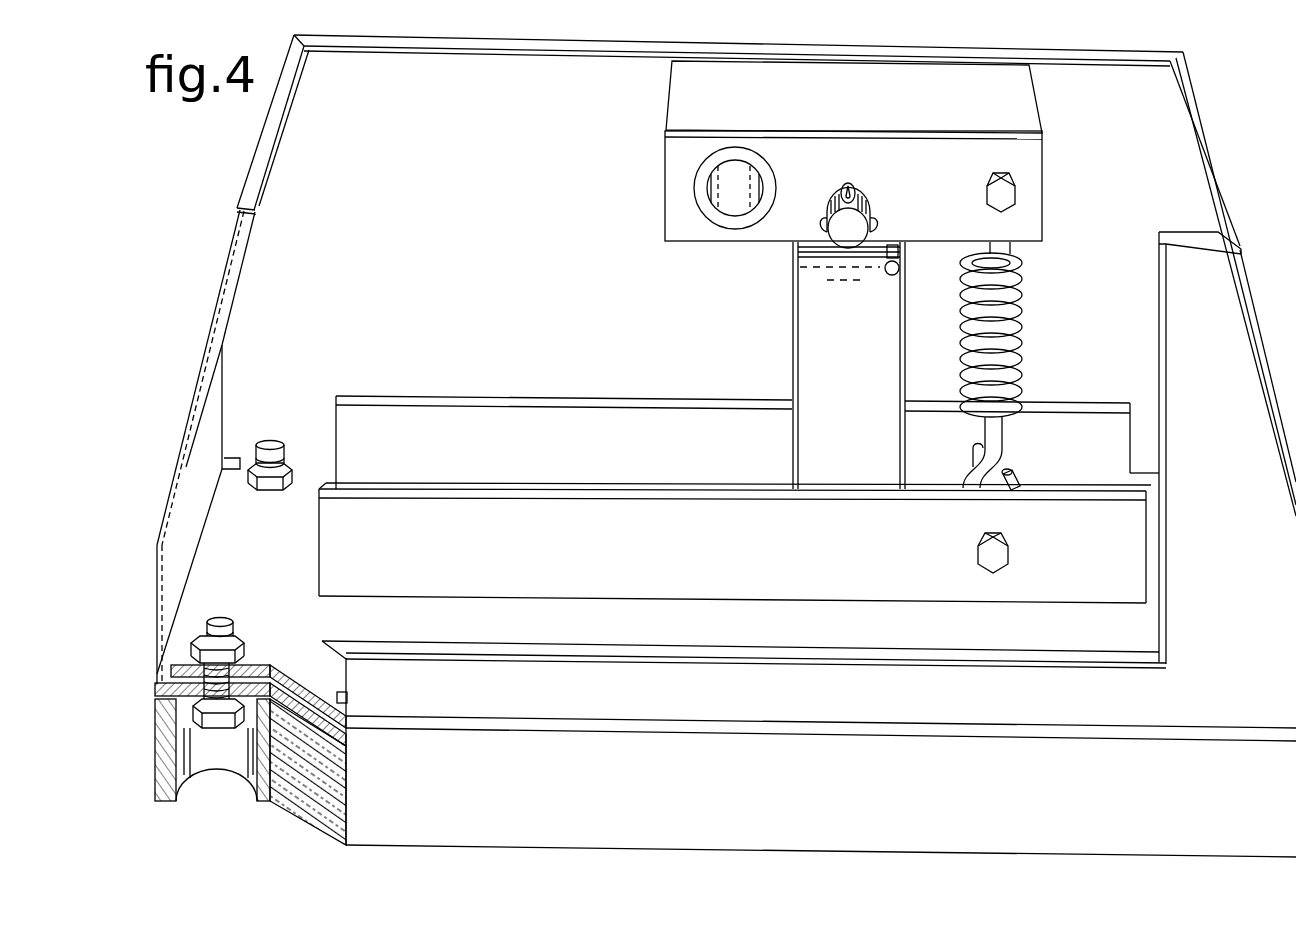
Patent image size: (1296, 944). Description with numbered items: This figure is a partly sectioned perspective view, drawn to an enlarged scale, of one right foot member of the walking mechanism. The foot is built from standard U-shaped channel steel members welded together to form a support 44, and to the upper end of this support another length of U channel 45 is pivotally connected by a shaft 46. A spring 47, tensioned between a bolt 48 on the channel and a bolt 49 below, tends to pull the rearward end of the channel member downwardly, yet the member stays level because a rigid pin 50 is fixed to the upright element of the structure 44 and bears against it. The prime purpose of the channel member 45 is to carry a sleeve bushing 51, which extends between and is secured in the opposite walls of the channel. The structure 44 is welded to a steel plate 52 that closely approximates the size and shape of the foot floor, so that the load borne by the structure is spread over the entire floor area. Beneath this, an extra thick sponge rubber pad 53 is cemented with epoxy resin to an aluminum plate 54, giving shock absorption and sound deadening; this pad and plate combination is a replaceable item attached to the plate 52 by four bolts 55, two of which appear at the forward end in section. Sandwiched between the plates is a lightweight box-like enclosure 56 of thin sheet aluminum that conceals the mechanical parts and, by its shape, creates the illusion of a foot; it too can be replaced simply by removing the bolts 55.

The support 44 is at (745, 352).
The U channel 45 is at (930, 189).
The shaft 46 is at (860, 242).
The spring 47 is at (1003, 343).
The bolt 48 is at (1002, 200).
The bolt 49 is at (996, 557).
The rigid pin 50 is at (888, 270).
The sleeve bushing 51 is at (767, 186).
The steel plate 52 is at (530, 631).
The sponge rubber pad 53 is at (798, 810).
The aluminum plate 54 is at (743, 727).
The bolts 55 is at (298, 441).
The box-like enclosure 56 is at (500, 236).